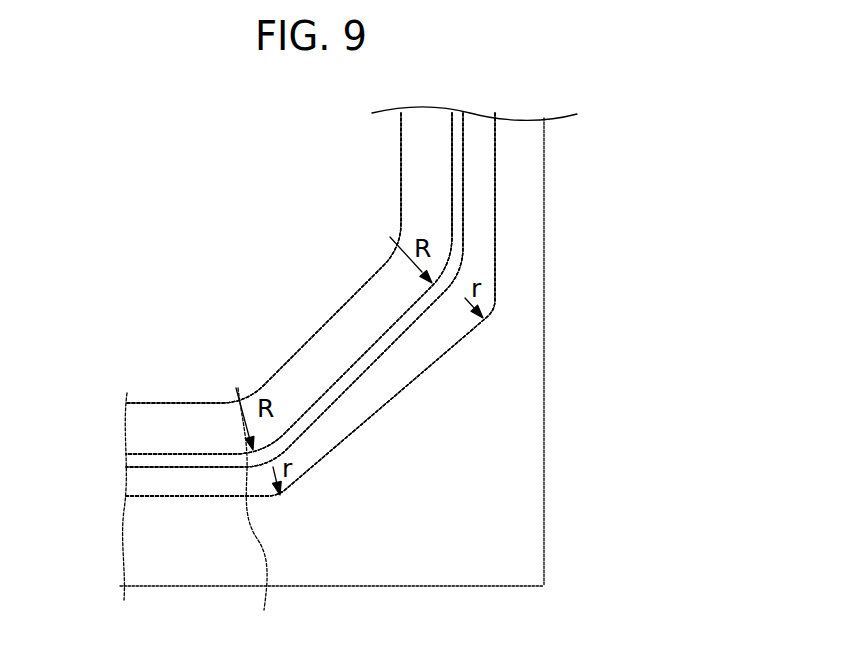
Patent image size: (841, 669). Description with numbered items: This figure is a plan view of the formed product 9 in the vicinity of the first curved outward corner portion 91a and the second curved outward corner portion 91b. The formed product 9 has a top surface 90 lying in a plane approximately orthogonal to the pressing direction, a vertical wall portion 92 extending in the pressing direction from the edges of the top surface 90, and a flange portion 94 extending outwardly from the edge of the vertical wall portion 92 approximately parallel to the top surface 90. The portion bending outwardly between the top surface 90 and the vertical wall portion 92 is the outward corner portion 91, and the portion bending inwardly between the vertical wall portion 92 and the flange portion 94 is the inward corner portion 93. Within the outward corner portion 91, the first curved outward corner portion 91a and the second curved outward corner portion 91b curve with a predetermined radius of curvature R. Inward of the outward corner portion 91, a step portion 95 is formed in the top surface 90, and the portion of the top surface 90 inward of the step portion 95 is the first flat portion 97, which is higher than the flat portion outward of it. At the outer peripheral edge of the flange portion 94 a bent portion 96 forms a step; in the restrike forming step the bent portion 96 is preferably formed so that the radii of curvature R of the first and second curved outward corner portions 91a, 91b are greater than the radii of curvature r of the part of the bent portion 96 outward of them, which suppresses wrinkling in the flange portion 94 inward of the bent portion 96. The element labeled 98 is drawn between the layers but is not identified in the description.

The formed product 9 is at (137, 177).
The top surface 90 is at (343, 175).
The outward corner portion 91 is at (142, 457).
The first curved outward corner portion 91a is at (448, 262).
The second curved outward corner portion 91b is at (266, 514).
The vertical wall portion 92 is at (459, 200).
The inward corner portion 93 is at (163, 465).
The flange portion 94 is at (487, 228).
The step portion 95 is at (142, 405).
The bent portion 96 is at (150, 498).
The first flat portion 97 is at (268, 257).
The outer layer 98 is at (168, 429).